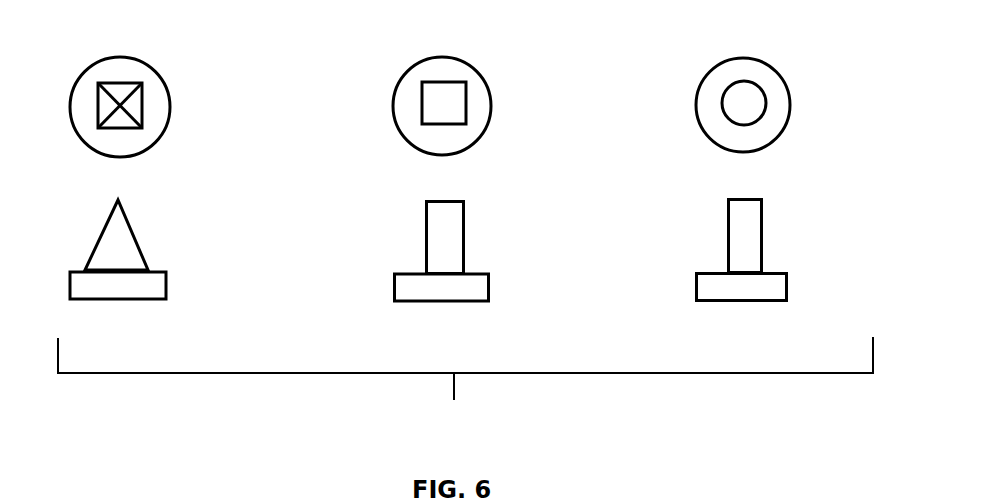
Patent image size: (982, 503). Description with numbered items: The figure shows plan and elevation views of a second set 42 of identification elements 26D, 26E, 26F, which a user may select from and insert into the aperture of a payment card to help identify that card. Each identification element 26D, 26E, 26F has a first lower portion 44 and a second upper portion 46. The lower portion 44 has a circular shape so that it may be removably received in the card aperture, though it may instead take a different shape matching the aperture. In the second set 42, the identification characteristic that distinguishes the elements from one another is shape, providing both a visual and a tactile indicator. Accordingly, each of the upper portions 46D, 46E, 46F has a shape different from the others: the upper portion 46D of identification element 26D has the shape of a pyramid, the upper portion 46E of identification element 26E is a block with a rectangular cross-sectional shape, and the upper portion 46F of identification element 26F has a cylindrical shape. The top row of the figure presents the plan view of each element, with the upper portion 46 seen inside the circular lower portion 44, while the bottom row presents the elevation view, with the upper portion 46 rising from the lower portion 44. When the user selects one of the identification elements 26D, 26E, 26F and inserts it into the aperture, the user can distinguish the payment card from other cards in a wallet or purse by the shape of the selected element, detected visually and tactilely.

The identification element 26D is at (133, 163).
The identification element 26E is at (450, 155).
The identification element 26F is at (741, 162).
The second set 42 is at (695, 390).
The first lower portion 44 is at (167, 122).
The second upper portion 46 is at (118, 81).
The upper portion 46D is at (110, 108).
The upper portion 46E is at (438, 102).
The upper portion 46F is at (737, 100).